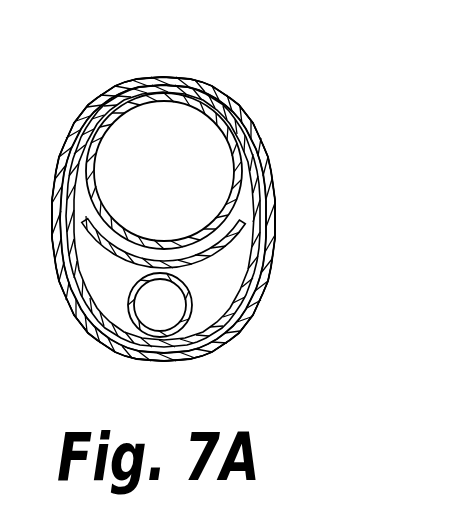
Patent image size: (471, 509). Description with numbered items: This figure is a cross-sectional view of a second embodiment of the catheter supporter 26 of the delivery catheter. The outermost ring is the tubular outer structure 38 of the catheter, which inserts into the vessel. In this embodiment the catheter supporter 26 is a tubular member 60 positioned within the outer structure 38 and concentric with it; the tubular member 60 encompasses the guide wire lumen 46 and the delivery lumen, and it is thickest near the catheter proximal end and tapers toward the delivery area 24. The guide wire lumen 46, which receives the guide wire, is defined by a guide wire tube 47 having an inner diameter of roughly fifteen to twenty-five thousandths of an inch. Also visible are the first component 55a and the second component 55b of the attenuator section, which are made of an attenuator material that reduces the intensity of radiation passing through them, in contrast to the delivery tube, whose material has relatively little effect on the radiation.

The delivery area 24 is at (244, 90).
The catheter supporter 26 is at (284, 176).
The tubular outer structure 38 is at (262, 147).
The guide wire lumen 46 is at (170, 302).
The guide wire tube 47 is at (195, 300).
The first component 55a is at (250, 206).
The second component 55b is at (238, 230).
The tubular member 60 is at (200, 84).